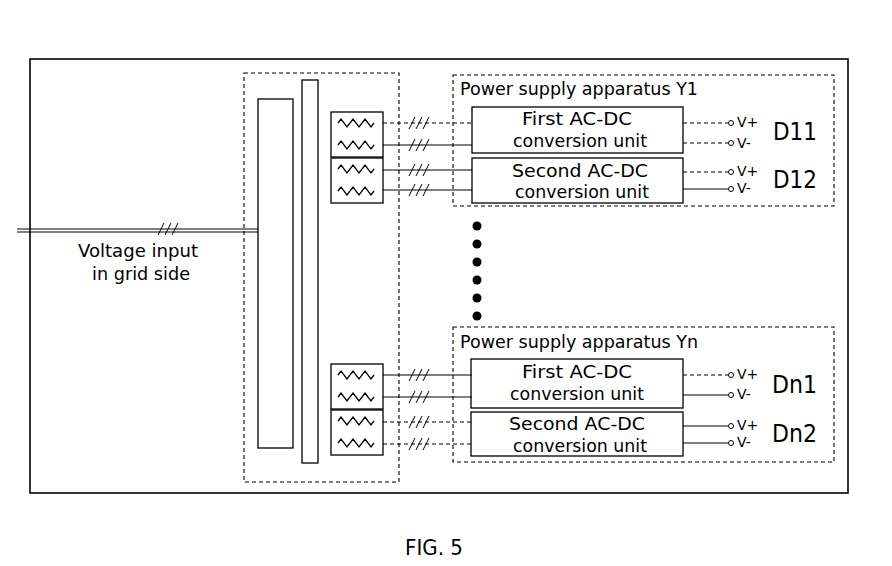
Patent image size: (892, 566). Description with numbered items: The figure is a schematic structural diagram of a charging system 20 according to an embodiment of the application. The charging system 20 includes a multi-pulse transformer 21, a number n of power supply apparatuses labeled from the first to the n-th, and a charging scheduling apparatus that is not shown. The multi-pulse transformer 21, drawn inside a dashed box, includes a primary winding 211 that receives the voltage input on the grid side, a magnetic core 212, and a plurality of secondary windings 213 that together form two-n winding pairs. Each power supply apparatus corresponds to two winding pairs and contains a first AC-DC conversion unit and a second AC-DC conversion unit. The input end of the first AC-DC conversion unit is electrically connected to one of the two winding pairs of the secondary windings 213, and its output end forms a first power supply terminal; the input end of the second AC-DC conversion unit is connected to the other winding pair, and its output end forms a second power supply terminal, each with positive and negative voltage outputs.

The charging system 20 is at (218, 67).
The multi-pulse transformer 21 is at (325, 76).
The primary winding 211 is at (272, 368).
The magnetic core 212 is at (303, 463).
The secondary windings 213 is at (373, 123).